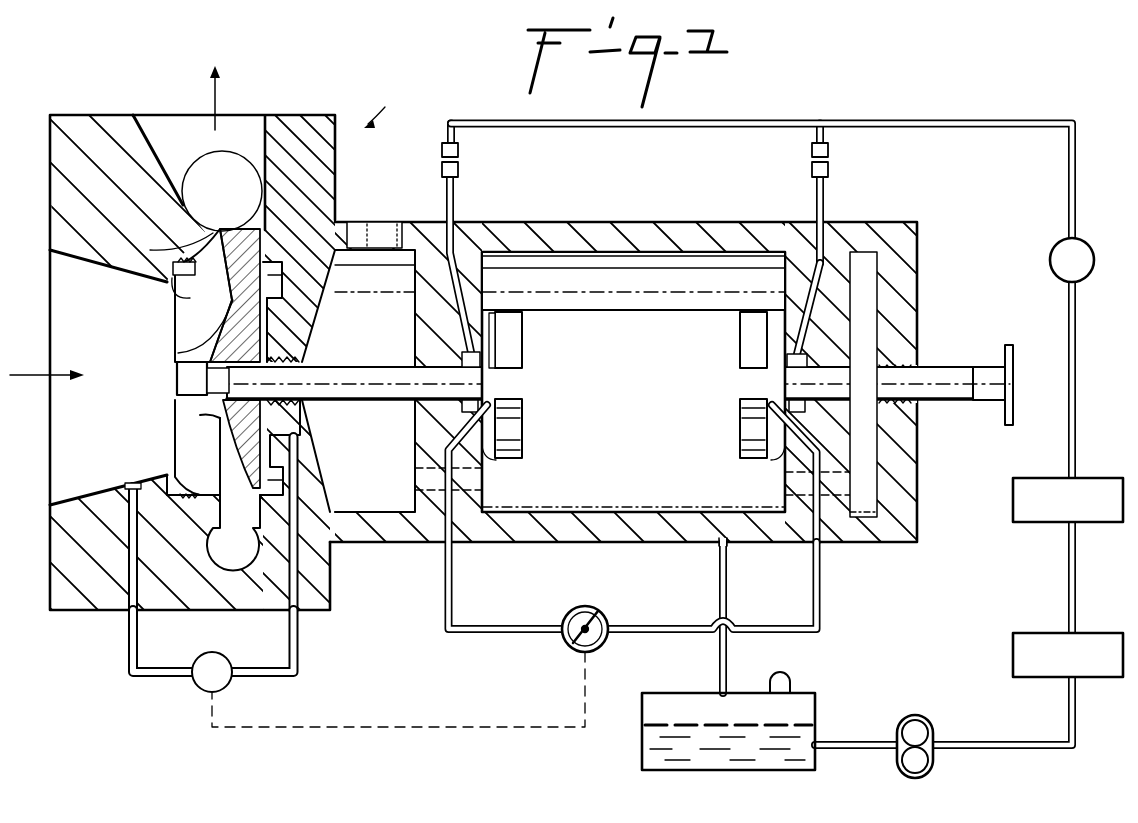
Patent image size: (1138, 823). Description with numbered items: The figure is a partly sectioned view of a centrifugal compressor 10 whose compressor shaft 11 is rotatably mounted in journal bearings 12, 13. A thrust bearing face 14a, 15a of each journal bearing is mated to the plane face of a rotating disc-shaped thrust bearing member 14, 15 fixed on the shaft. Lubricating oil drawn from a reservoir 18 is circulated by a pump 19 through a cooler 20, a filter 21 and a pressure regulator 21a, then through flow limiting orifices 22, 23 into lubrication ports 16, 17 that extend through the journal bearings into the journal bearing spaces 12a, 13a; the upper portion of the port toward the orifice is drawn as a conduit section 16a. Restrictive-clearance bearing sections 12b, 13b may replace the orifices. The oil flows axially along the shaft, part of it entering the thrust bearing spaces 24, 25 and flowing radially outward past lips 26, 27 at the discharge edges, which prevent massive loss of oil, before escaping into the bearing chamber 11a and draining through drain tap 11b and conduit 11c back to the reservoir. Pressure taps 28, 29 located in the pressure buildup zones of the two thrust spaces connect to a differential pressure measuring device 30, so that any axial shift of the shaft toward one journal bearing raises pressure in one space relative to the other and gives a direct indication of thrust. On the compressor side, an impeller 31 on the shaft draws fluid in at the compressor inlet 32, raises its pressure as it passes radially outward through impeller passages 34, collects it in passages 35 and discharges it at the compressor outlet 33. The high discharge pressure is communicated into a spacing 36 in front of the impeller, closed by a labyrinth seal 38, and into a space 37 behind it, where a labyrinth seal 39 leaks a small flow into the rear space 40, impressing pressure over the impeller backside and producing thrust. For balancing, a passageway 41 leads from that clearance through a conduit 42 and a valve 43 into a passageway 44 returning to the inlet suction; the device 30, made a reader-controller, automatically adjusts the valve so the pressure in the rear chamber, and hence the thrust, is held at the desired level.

The centrifugal compressor 10 is at (384, 107).
The compressor shaft 11 is at (618, 367).
The bearing chamber 11a is at (610, 498).
The drain tap 11b is at (707, 542).
The conduit 11c is at (720, 590).
The journal bearing 12 is at (757, 305).
The journal bearing space 12a is at (877, 340).
The bearing section 12b is at (780, 350).
The journal bearing 13 is at (517, 302).
The journal bearing space 13a is at (462, 357).
The bearing section 13b is at (492, 355).
The thrust bearing member 14 is at (738, 415).
The thrust bearing face 14a is at (768, 432).
The thrust bearing member 15 is at (520, 450).
The thrust bearing face 15a is at (497, 410).
The lubrication port 16 is at (827, 247).
The conduit upper portion 16a is at (815, 192).
The lubrication port 17 is at (457, 247).
The reservoir 18 is at (735, 770).
The pump 19 is at (912, 782).
The cooler 20 is at (1012, 656).
The filter 21 is at (1012, 508).
The pressure regulator 21a is at (1050, 258).
The flow limiting orifice 22 is at (830, 156).
The flow limiting orifice 23 is at (459, 152).
The thrust bearing space 24 is at (765, 343).
The thrust bearing space 25 is at (523, 343).
The lip 26 is at (763, 463).
The lip 27 is at (490, 457).
The pressure tap 28 is at (865, 547).
The pressure tap 29 is at (423, 530).
The differential pressure measuring device 30 is at (565, 615).
The impeller 31 is at (177, 350).
The compressor inlet 32 is at (63, 333).
The compressor outlet 33 is at (237, 133).
The impeller passages 34 is at (193, 333).
The passages 35 is at (193, 187).
The spacing 36 is at (165, 272).
The space 37 is at (263, 237).
The labyrinth seal 38 is at (187, 297).
The labyrinth seal 39 is at (262, 265).
The space 40 is at (267, 338).
The passageway 41 is at (300, 603).
The conduit 42 is at (300, 672).
The valve 43 is at (198, 687).
The passageway 44 is at (103, 603).